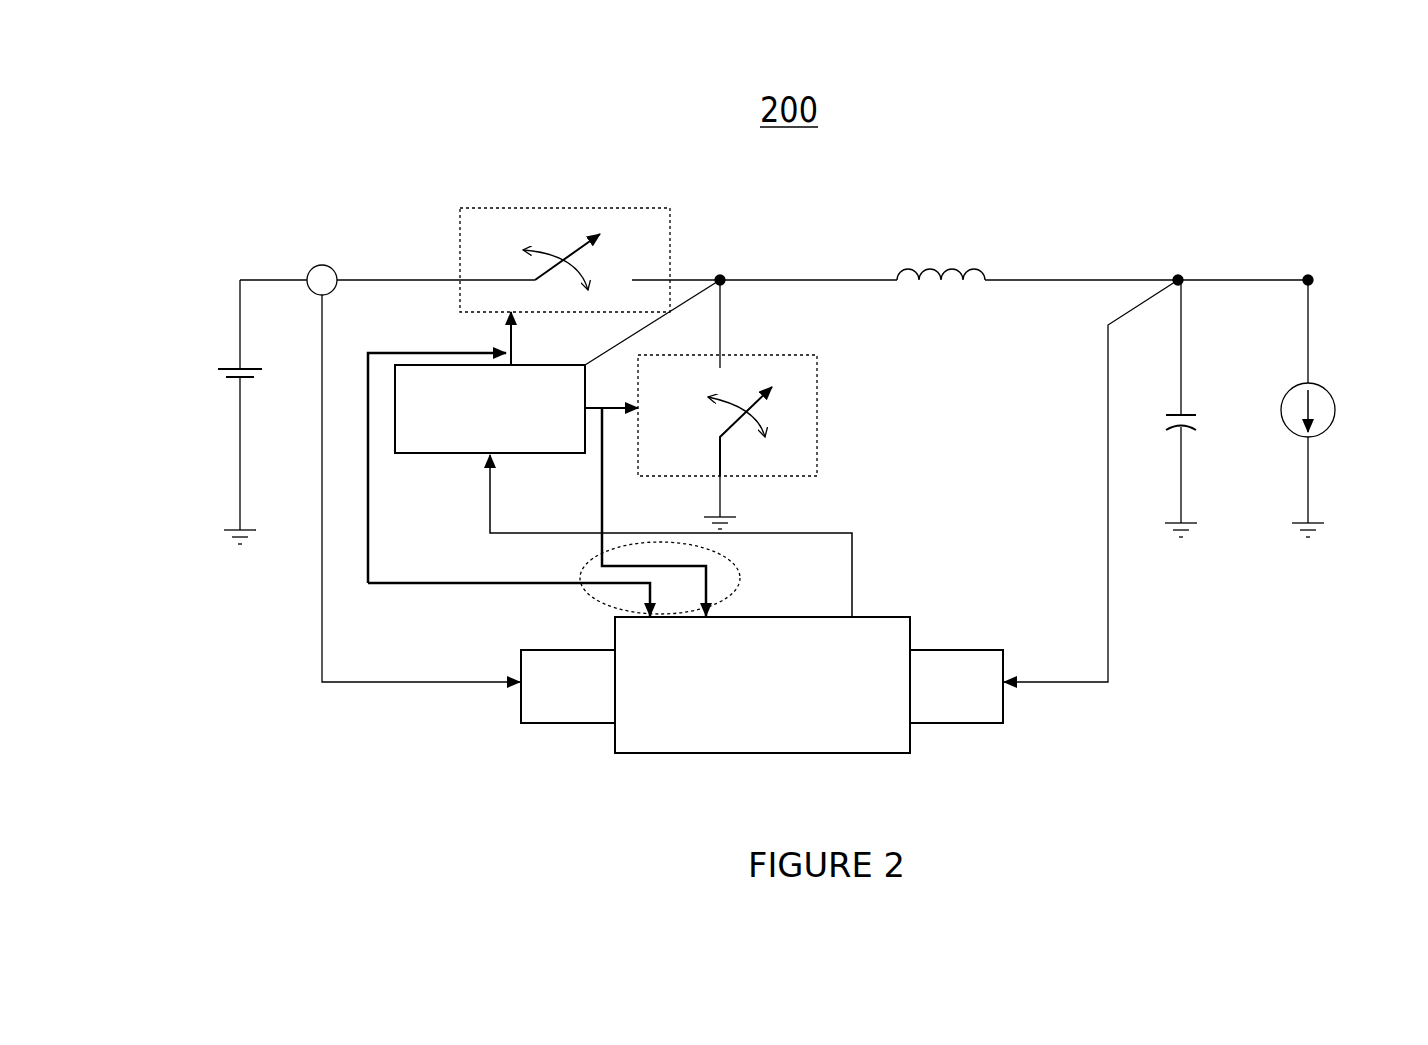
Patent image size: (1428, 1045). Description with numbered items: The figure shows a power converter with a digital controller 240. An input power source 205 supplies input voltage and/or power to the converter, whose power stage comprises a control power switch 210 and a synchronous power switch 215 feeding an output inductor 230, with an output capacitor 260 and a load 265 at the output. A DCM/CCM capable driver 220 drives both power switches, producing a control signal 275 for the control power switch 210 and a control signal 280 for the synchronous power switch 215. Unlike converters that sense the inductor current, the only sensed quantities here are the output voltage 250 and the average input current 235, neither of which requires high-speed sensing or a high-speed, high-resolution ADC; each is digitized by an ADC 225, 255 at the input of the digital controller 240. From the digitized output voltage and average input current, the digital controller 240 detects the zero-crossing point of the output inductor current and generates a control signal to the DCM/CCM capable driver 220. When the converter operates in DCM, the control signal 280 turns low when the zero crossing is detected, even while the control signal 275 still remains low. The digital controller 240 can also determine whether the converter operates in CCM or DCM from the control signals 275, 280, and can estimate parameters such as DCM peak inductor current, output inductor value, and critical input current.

The input power source 205 is at (196, 400).
The control power switch 210 is at (541, 218).
The synchronous power switch 215 is at (789, 404).
The DCM/CCM capable driver 220 is at (510, 414).
The input current ADC 225 is at (537, 707).
The output inductor 230 is at (900, 240).
The average input current 235 is at (361, 505).
The digital controller 240 is at (762, 717).
The output voltage 250 is at (1089, 481).
The output voltage ADC 255 is at (1005, 720).
The output capacitor 260 is at (1217, 460).
The load 265 is at (1351, 408).
The control signal 275 is at (507, 458).
The control signal 280 is at (671, 515).